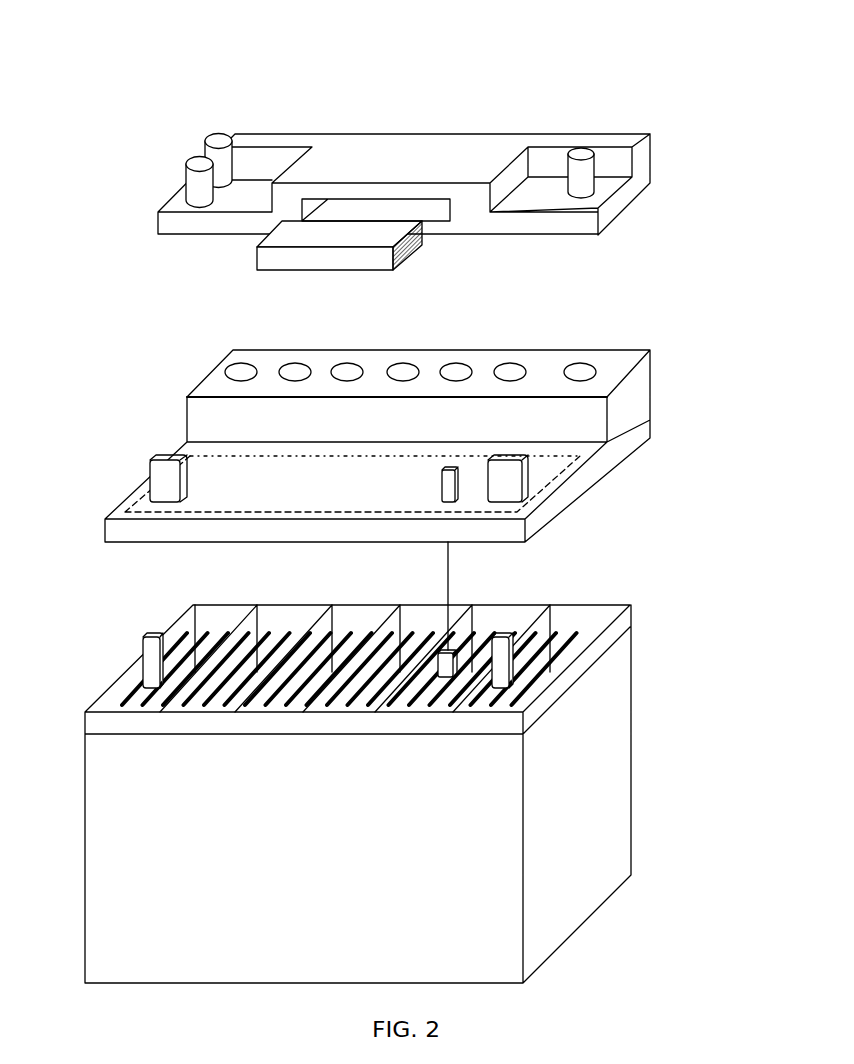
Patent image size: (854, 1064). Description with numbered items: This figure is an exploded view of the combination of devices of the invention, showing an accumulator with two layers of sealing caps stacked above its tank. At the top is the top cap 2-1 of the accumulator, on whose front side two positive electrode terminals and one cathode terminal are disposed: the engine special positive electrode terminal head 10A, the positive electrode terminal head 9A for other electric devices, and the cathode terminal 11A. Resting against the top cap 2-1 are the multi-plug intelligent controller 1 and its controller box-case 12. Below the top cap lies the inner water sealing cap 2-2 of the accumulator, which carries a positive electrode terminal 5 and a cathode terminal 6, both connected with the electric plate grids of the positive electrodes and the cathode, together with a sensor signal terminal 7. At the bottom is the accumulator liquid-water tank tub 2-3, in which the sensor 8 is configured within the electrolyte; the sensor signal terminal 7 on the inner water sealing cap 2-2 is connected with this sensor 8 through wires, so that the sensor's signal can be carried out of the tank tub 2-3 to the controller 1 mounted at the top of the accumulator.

The top cap 2-1 is at (440, 134).
The engine special positive electrode terminal head 10A is at (203, 137).
The positive electrode terminal head for other electric devices 9A is at (175, 168).
The cathode terminal 11A is at (583, 178).
The controller box-case 12 is at (422, 212).
The multi-plug intelligent controller 1 is at (360, 258).
The inner water sealing cap 2-2 is at (653, 360).
The positive electrode terminal 5 is at (147, 458).
The cathode terminal 6 is at (512, 480).
The sensor signal terminal 7 is at (455, 492).
The accumulator liquid-water tank tub 2-3 is at (633, 640).
The sensor 8 is at (448, 678).